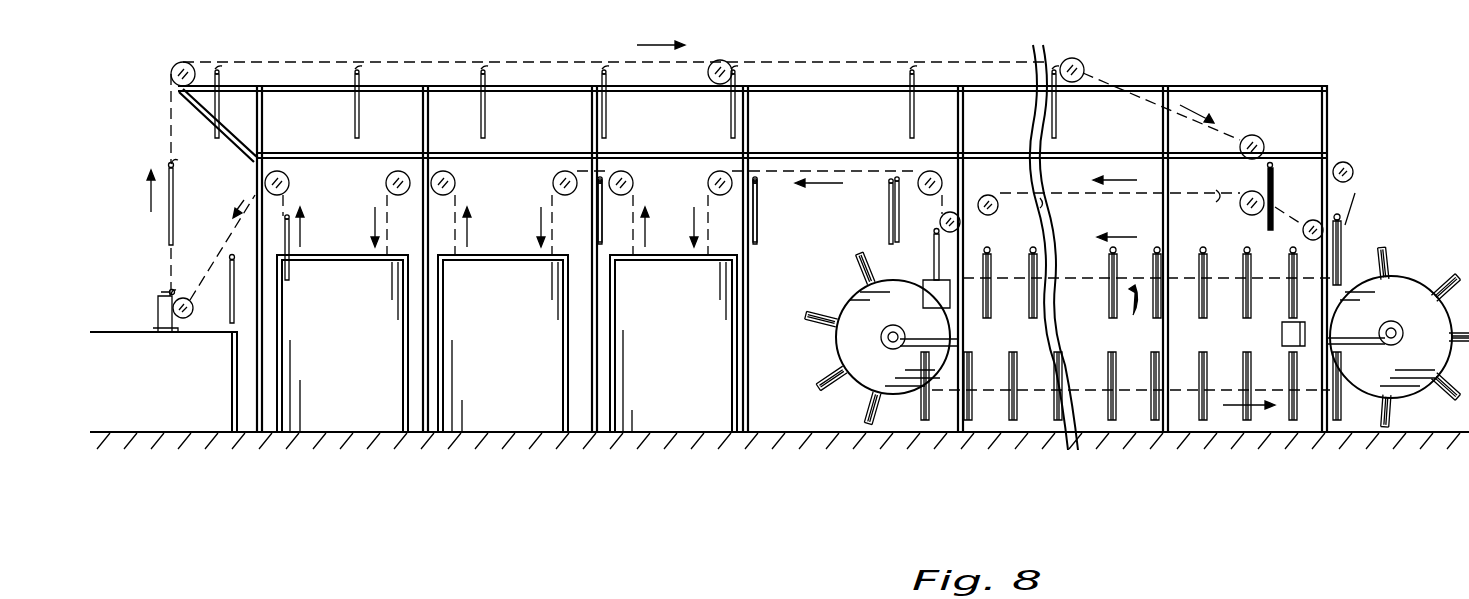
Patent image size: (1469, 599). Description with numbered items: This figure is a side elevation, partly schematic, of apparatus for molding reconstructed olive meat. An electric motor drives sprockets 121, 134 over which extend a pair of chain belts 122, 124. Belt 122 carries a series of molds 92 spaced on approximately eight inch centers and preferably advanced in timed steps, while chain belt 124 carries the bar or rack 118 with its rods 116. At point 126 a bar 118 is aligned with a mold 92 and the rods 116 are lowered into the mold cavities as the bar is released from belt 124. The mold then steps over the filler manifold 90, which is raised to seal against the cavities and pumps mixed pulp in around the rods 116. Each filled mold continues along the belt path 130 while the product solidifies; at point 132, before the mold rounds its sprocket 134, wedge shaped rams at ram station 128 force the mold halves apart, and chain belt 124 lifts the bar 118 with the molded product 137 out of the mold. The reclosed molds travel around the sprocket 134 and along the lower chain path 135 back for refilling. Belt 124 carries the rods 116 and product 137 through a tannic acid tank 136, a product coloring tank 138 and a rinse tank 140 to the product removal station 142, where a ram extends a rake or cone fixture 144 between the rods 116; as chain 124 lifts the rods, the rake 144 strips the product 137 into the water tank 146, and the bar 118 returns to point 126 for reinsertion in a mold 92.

The filler manifold 90 is at (1282, 333).
The mold 92 is at (1212, 258).
The rods 116 is at (360, 108).
The bar or rack 118 is at (357, 68).
The sprocket 121 is at (193, 314).
The chain belt 122 is at (912, 278).
The chain belt 124 is at (172, 247).
The rod insertion point 126 is at (1360, 206).
The ram station 128 is at (975, 262).
The belt path 130 is at (1041, 333).
The mold opening point 132 is at (957, 300).
The sprocket 134 is at (852, 290).
The lower chain path 135 is at (1130, 394).
The tannic acid tank 136 is at (691, 374).
The molded product 137 is at (602, 218).
The product coloring tank 138 is at (521, 374).
The rinse tank 140 is at (358, 374).
The product removal station 142 is at (158, 307).
The rake or cone fixture 144 is at (187, 296).
The water tank 146 is at (180, 408).